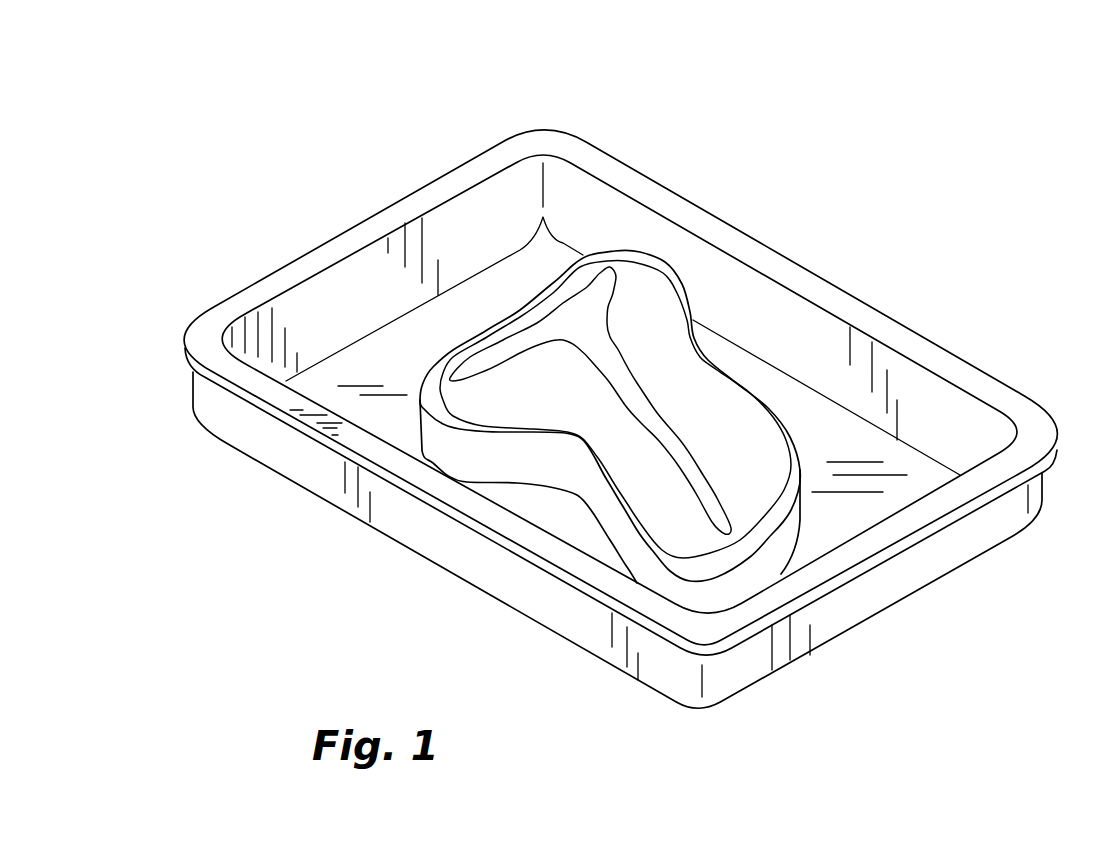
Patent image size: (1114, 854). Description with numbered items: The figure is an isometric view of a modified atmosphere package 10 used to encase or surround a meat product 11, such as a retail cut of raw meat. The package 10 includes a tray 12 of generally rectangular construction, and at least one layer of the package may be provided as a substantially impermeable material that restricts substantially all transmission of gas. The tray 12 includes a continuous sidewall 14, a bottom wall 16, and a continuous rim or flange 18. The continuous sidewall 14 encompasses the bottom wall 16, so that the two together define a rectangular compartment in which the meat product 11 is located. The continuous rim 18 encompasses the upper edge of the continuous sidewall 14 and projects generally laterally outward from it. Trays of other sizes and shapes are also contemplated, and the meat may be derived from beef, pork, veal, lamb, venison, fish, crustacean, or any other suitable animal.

The modified atmosphere package 10 is at (672, 113).
The meat product 11 is at (681, 285).
The tray 12 is at (720, 677).
The continuous sidewall 14 is at (330, 475).
The bottom wall 16 is at (373, 377).
The continuous rim or flange 18 is at (188, 362).